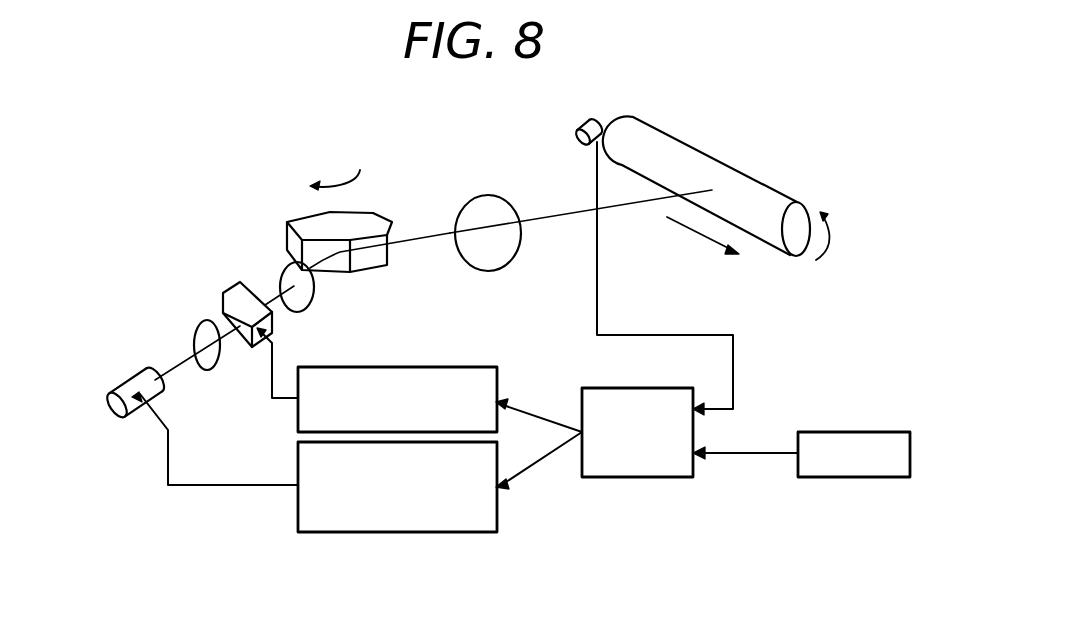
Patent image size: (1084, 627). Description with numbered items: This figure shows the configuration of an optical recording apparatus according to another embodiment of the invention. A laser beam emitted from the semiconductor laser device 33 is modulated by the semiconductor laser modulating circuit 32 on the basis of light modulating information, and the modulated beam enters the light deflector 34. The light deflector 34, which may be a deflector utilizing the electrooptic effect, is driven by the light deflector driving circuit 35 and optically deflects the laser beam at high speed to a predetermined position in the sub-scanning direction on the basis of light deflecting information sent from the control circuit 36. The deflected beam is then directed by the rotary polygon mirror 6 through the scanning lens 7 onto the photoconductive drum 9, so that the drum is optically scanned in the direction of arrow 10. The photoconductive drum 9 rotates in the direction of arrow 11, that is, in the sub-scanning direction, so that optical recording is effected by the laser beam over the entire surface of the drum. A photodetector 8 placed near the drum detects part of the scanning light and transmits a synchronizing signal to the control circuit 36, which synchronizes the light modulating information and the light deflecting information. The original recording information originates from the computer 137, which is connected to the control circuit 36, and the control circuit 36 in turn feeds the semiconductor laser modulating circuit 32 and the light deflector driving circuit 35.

The rotary polygon mirror 6 is at (378, 216).
The scanning lens 7 is at (500, 196).
The photodetector 8 is at (579, 126).
The photoconductive drum 9 is at (758, 181).
The arrow 10 is at (690, 232).
The arrow 11 is at (834, 228).
The semiconductor laser modulating circuit 32 is at (497, 512).
The semiconductor laser device 33 is at (120, 386).
The light deflector 34 is at (230, 294).
The light deflector driving circuit 35 is at (438, 368).
The control circuit 36 is at (642, 388).
The computer 137 is at (841, 432).